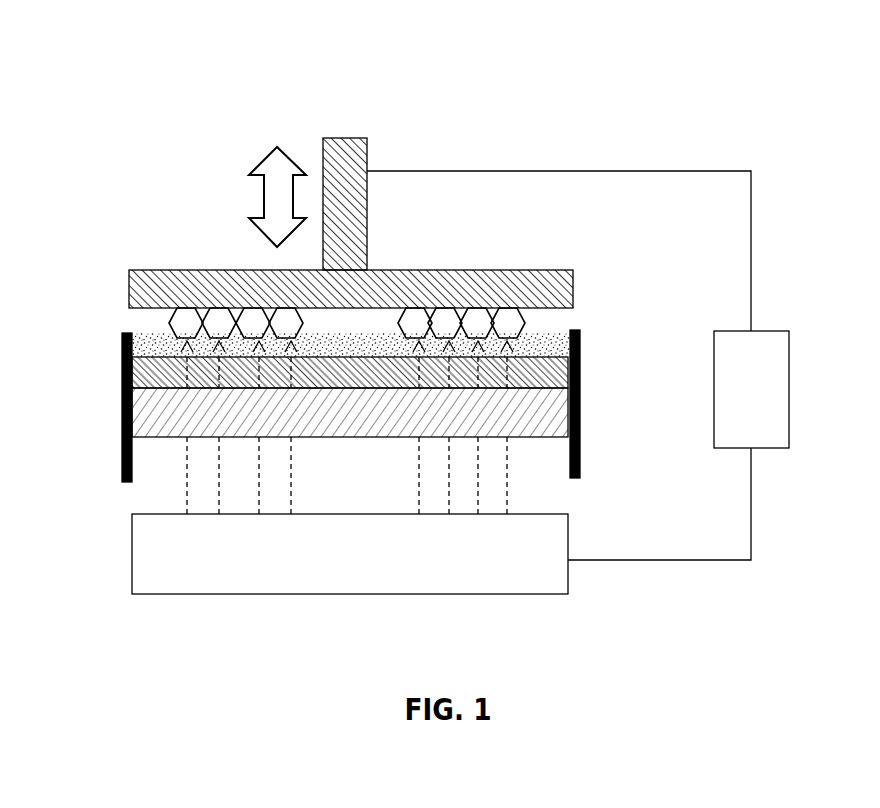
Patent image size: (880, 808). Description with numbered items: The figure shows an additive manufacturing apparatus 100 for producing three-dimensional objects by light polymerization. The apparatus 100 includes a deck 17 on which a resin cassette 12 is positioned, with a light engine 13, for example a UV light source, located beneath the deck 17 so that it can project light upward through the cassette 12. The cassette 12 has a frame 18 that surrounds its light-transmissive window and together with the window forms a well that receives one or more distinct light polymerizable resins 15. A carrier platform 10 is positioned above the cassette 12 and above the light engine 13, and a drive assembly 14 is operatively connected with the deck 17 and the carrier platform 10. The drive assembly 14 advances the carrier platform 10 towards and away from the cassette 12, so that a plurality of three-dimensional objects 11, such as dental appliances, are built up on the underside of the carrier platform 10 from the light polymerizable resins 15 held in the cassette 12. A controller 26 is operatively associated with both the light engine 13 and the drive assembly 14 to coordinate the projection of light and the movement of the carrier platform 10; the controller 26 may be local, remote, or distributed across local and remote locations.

The additive manufacturing apparatus 100 is at (122, 36).
The carrier platform 10 is at (137, 285).
The three-dimensional objects 11 is at (217, 328).
The resin cassette 12 is at (137, 377).
The light engine 13 is at (132, 562).
The drive assembly 14 is at (343, 150).
The light polymerizable resins 15 is at (575, 350).
The deck 17 is at (123, 453).
The frame 18 is at (580, 450).
The controller 26 is at (791, 388).